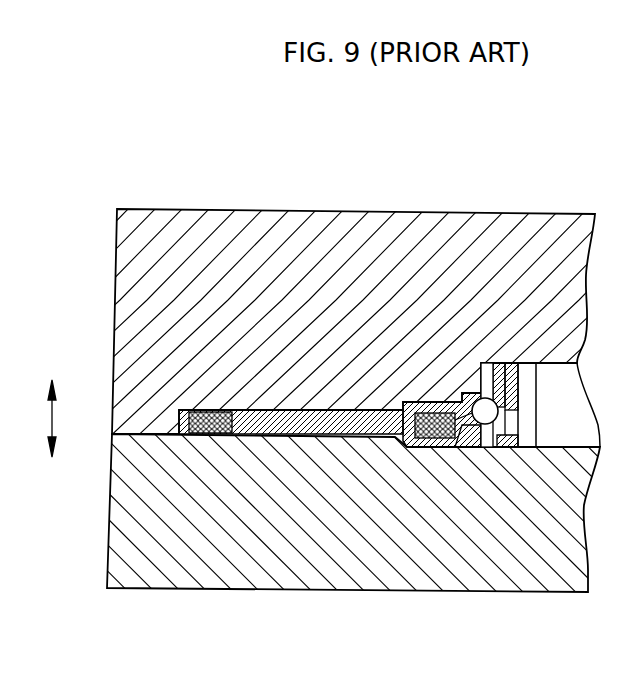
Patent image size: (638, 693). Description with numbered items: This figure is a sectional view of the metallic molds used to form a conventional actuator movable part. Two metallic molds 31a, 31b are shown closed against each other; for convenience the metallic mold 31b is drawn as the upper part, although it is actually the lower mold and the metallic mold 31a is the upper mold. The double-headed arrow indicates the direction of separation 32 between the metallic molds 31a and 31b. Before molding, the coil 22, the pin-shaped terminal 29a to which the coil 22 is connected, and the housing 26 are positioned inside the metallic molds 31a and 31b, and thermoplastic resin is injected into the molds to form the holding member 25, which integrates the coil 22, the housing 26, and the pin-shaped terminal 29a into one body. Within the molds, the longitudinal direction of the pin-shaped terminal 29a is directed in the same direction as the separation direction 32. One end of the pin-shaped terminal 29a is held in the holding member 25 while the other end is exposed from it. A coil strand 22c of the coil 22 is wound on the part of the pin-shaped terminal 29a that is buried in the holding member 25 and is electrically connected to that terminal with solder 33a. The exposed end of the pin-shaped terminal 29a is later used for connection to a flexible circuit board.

The metallic mold 31b is at (155, 213).
The metallic mold 31a is at (149, 576).
The holding member 25 is at (250, 422).
The coil 22 is at (421, 407).
The coil strand 22c is at (469, 449).
The solder 33a is at (505, 449).
The pin-shaped terminal 29a is at (485, 397).
The housing 26 is at (523, 373).
The direction of separation 32 is at (70, 418).